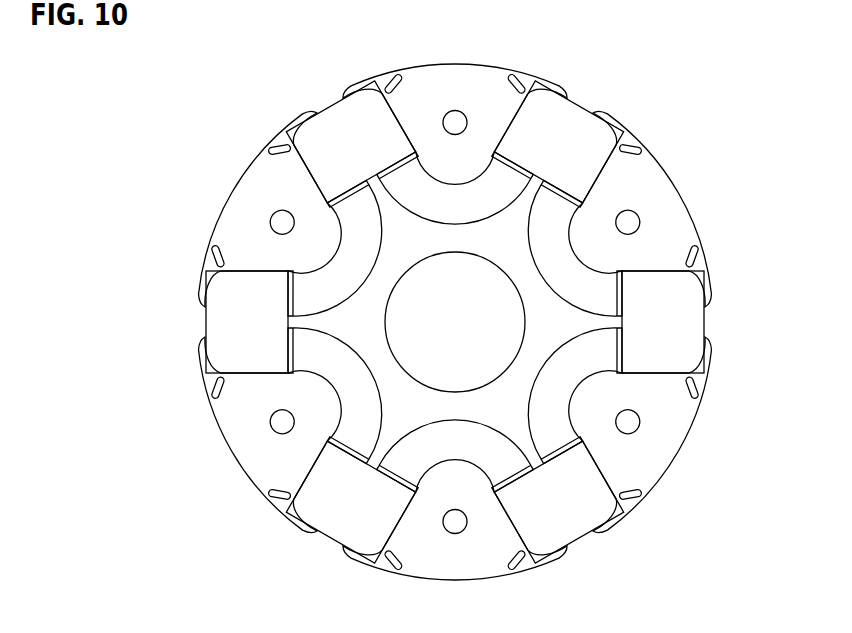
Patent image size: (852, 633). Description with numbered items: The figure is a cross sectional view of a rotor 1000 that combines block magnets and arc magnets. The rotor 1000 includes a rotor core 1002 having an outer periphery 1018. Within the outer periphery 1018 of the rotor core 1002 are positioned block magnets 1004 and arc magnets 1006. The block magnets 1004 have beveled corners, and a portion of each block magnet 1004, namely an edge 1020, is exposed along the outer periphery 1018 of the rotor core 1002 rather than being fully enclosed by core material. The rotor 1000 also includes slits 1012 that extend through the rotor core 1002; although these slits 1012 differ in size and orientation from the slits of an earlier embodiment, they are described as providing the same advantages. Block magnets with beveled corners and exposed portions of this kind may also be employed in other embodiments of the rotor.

The rotor 1000 is at (709, 83).
The rotor core 1002 is at (243, 202).
The block magnets 1004 is at (572, 112).
The arc magnets 1006 is at (550, 230).
The slits 1012 is at (213, 253).
The outer periphery 1018 is at (698, 233).
The edge 1020 is at (207, 333).